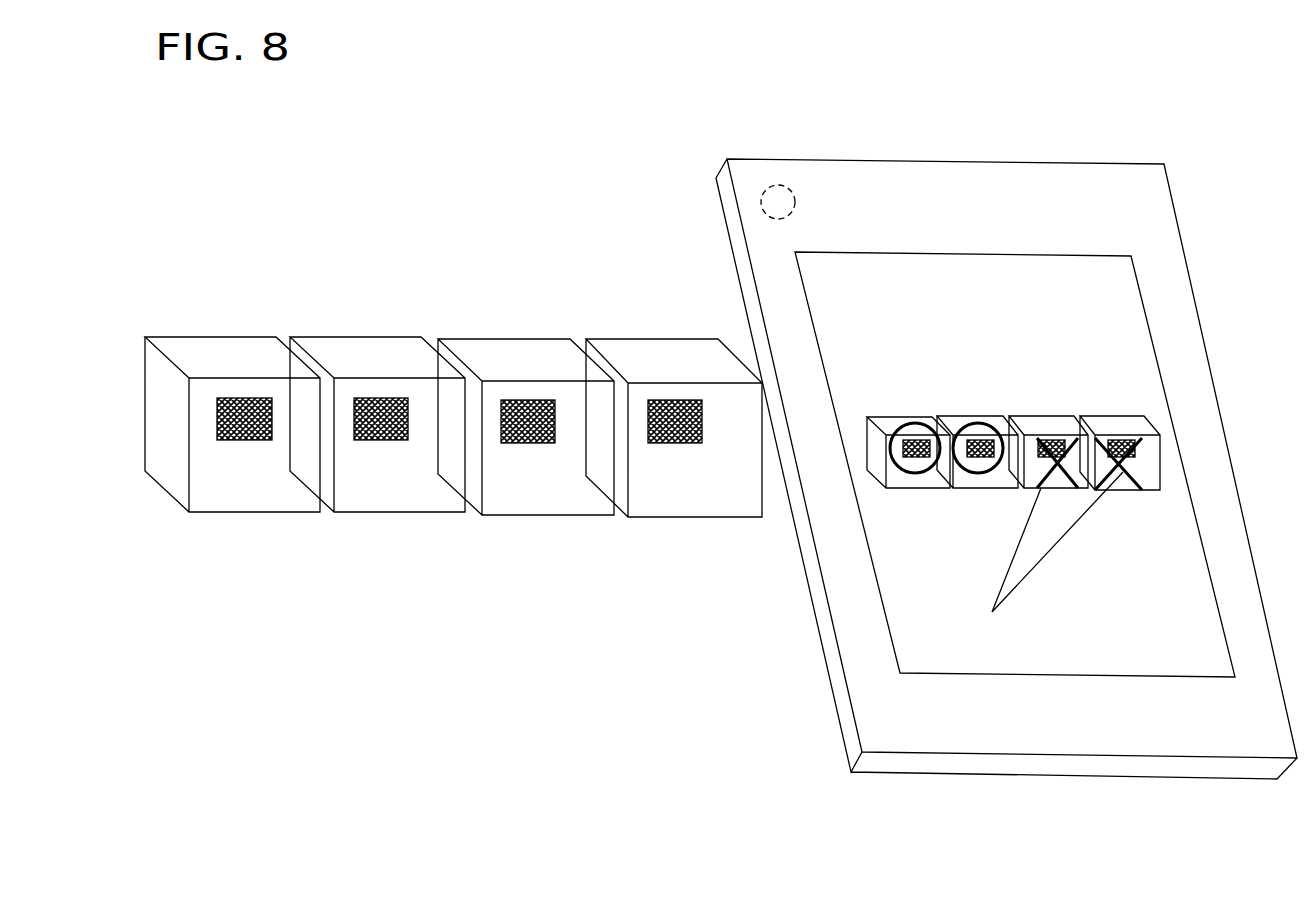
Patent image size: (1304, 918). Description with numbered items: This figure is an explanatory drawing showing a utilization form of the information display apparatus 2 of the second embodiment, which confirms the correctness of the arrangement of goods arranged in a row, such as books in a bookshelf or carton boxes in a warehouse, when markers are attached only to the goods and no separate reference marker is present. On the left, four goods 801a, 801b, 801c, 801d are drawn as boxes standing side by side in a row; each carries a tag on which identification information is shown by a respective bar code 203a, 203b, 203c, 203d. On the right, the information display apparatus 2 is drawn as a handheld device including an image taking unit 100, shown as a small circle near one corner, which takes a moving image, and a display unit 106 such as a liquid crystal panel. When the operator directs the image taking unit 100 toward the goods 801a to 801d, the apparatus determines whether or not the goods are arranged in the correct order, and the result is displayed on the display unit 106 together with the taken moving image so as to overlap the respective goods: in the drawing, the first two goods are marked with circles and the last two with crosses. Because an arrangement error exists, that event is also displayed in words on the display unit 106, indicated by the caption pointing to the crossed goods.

The information display apparatus 2 is at (967, 438).
The image taking unit 100 is at (762, 198).
The display unit 106 is at (1132, 338).
The bar code 203a is at (268, 397).
The bar code 203b is at (403, 397).
The bar code 203c is at (540, 398).
The bar code 203d is at (678, 398).
The goods 801a is at (313, 487).
The goods 801b is at (458, 482).
The goods 801c is at (607, 480).
The goods 801d is at (747, 487).